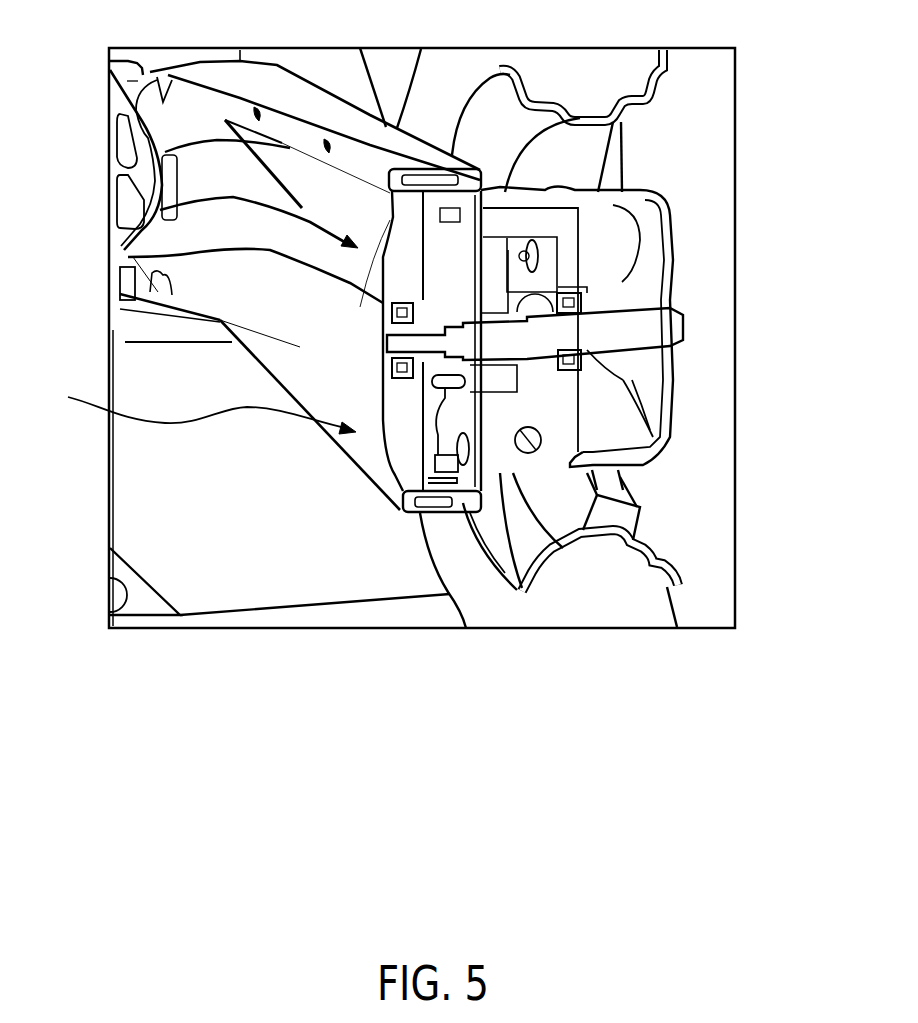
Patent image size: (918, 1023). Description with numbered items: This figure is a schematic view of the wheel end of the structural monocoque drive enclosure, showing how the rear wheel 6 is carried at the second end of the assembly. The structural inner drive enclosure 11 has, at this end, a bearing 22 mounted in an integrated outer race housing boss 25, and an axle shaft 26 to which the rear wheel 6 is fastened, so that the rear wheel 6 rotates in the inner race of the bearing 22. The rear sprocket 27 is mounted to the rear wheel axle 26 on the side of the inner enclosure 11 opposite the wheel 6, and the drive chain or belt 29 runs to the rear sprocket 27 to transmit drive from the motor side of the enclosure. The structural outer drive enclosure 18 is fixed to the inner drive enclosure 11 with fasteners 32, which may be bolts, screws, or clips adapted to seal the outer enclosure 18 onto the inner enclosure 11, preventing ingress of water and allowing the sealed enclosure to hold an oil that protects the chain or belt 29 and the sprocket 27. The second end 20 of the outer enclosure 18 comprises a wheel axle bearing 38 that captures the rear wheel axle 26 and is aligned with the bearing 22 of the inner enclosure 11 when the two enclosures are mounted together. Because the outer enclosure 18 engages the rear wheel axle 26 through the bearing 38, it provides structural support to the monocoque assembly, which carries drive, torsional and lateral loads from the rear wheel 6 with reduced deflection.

The rear wheel 6 is at (640, 540).
The structural inner drive enclosure 11 is at (460, 500).
The structural outer drive enclosure 18 is at (180, 210).
The second end of the outer enclosure 20 is at (202, 410).
The bearing 22 is at (587, 298).
The integrated outer race housing boss 25 is at (470, 310).
The axle shaft 26 is at (683, 312).
The rear sprocket 27 is at (430, 438).
The drive chain or belt 29 is at (182, 158).
The fasteners 32 is at (225, 120).
The wheel axle bearing 38 is at (128, 253).